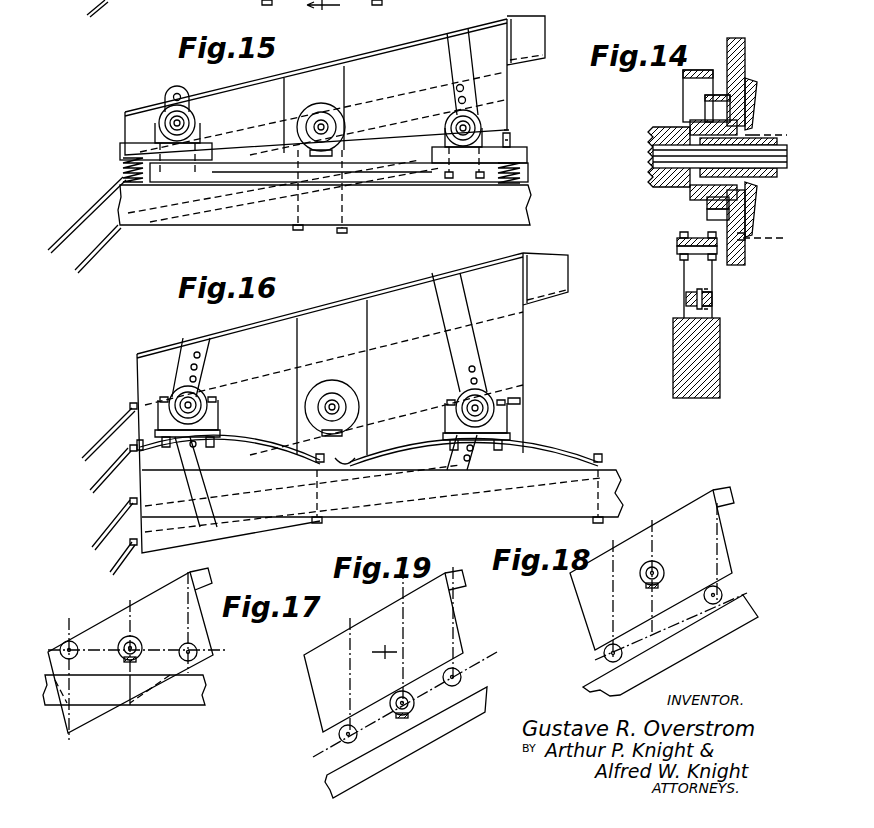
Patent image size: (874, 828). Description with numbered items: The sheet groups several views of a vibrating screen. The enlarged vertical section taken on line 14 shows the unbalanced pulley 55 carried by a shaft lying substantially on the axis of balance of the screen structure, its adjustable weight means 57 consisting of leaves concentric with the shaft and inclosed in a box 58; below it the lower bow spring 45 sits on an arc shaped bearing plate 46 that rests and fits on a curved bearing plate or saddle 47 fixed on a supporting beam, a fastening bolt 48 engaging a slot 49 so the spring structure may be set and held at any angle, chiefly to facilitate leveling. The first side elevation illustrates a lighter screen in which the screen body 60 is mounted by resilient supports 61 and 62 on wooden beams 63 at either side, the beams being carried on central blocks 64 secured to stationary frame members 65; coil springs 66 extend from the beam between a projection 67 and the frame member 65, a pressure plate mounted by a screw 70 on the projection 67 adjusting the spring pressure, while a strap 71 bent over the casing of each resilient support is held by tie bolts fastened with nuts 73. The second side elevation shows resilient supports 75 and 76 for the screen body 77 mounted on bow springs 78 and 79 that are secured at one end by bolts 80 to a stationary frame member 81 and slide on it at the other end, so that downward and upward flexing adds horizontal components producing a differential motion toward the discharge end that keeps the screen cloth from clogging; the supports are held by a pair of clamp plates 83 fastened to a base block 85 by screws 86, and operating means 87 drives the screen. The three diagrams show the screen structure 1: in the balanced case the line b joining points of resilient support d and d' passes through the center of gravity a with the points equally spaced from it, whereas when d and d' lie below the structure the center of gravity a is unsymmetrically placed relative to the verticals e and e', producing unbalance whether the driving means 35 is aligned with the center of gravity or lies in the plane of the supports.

In FIG. 15, the section line 14 is at (323, 15).
In FIG. 15, the screen body 60 is at (368, 68).
In FIG. 15, the resilient support 61 is at (166, 110).
In FIG. 15, the resilient support 62 is at (490, 122).
In FIG. 15, the wooden beam 63 is at (395, 167).
In FIG. 15, the central block 64 is at (333, 180).
In FIG. 15, the stationary frame member 65 is at (515, 210).
In FIG. 15, the coil spring 66 is at (122, 168).
In FIG. 15, the projection 67 is at (528, 156).
In FIG. 15, the screw 70 is at (512, 140).
In FIG. 15, the strap 71 is at (482, 112).
In FIG. 15, the nuts 73 is at (443, 176).
In FIG. 14, the unbalanced pulley 55 is at (656, 138).
In FIG. 14, the weight means 57 is at (706, 203).
In FIG. 14, the box 58 is at (706, 215).
In FIG. 14, the lower bow spring 45 is at (676, 244).
In FIG. 14, the arc shaped bearing plate 46 is at (686, 297).
In FIG. 14, the curved bearing plate or saddle 47 is at (696, 302).
In FIG. 14, the fastening bolt 48 is at (712, 296).
In FIG. 14, the slot 49 is at (712, 302).
In FIG. 16, the resilient support 75 is at (170, 396).
In FIG. 16, the resilient support 76 is at (490, 390).
In FIG. 16, the screen body 77 is at (417, 302).
In FIG. 16, the bow spring 78 is at (276, 442).
In FIG. 16, the bow spring 79 is at (569, 443).
In FIG. 16, the bolts 80 is at (603, 478).
In FIG. 16, the stationary frame member 81 is at (382, 498).
In FIG. 16, the clamp plates 83 is at (451, 398).
In FIG. 16, the base block 85 is at (508, 418).
In FIG. 16, the screws 86 is at (521, 401).
In FIG. 16, the operating means 87 is at (350, 385).
In FIG. 17, the screen structure 1 is at (112, 618).
In FIG. 17, the driving means 35 is at (137, 657).
In FIG. 19, the driving means 35 is at (414, 706).
In FIG. 18, the driving means 35 is at (658, 582).
In FIG. 17, the center of gravity a is at (138, 642).
In FIG. 19, the center of gravity a is at (390, 650).
In FIG. 18, the center of gravity a is at (663, 568).
In FIG. 17, the line b- b is at (132, 652).
In FIG. 17, the point of resilient support d is at (61, 636).
In FIG. 19, the point of resilient support d is at (340, 746).
In FIG. 18, the point of resilient support d is at (600, 659).
In FIG. 17, the point of resilient support d' is at (202, 643).
In FIG. 19, the point of resilient support d' is at (463, 676).
In FIG. 18, the point of resilient support d' is at (725, 590).
In FIG. 17, the vertical e is at (70, 675).
In FIG. 18, the vertical e is at (612, 592).
In FIG. 17, the vertical e' is at (190, 613).
In FIG. 18, the vertical e' is at (719, 535).